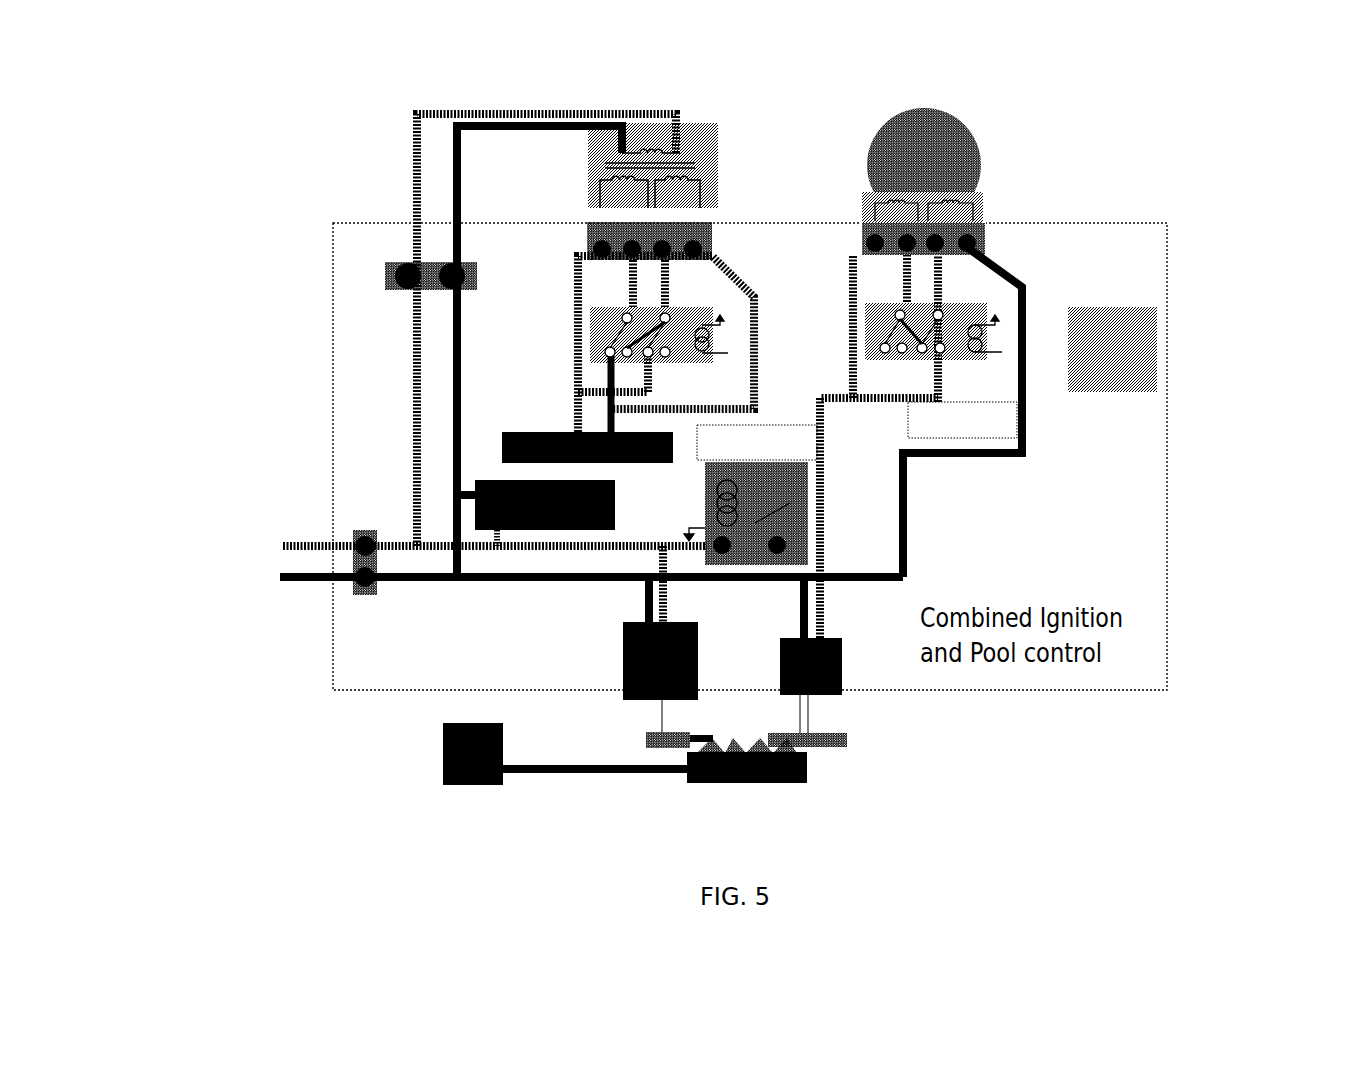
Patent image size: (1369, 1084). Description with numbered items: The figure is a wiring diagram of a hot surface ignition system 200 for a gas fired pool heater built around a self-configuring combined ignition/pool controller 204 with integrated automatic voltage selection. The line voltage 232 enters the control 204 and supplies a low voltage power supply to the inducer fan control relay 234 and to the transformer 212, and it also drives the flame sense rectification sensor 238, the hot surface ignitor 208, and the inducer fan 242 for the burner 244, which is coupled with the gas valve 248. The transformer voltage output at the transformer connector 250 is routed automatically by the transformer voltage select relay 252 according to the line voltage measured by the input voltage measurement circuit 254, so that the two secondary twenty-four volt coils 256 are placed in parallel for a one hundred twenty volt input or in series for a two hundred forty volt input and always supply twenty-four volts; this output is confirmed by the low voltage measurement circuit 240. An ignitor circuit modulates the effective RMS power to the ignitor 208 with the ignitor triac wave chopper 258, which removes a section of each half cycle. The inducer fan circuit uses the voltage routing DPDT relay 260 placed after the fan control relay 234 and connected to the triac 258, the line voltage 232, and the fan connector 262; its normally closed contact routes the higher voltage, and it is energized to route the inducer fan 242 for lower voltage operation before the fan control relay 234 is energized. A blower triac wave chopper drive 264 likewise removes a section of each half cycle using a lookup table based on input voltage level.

The hot surface ignition system 200 is at (214, 189).
The self-configuring combined ignition/pool controller 204 is at (1167, 260).
The hot surface ignitor 208 is at (847, 737).
The transformer 212 is at (652, 155).
The line voltage 232 is at (246, 543).
The inducer fan control relay 234 is at (707, 515).
The flame sense rectification sensor 238 is at (623, 657).
The low voltage measurement circuit 240 is at (540, 432).
The inducer fan 242 is at (980, 152).
The burner 244 is at (807, 775).
The gas valve 248 is at (443, 742).
The transformer connector 250 is at (708, 222).
The transformer voltage select relay 252 is at (592, 335).
The input voltage measurement circuit 254 is at (493, 482).
The secondary 24V coils 256 is at (590, 190).
The ignitor triac wave chopper 258 is at (830, 638).
The voltage routing DPDT relay 260 is at (865, 322).
The fan connector 262 is at (985, 220).
The blower triac wave chopper drive 264 is at (1157, 353).